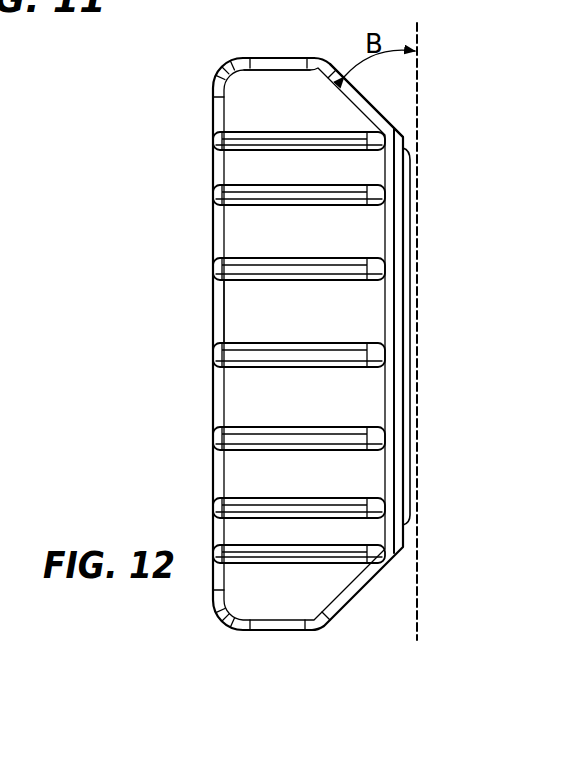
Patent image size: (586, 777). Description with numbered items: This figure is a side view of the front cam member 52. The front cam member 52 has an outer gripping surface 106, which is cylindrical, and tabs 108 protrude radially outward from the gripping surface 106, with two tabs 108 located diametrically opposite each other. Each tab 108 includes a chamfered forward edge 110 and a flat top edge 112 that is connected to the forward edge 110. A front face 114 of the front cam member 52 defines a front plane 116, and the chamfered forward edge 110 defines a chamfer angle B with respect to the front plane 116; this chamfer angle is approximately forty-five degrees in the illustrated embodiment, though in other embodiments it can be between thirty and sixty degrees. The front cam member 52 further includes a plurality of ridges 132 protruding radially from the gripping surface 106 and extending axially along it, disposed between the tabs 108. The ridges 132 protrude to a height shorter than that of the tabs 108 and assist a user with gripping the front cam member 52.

The front cam member 52 is at (242, 398).
The outer gripping surface 106 is at (241, 251).
The tab 108 is at (263, 83).
The chamfered forward edge 110 is at (344, 74).
The flat top edge 112 is at (278, 58).
The front face 114 is at (421, 303).
The front plane 116 is at (419, 108).
The ridges 132 is at (254, 190).